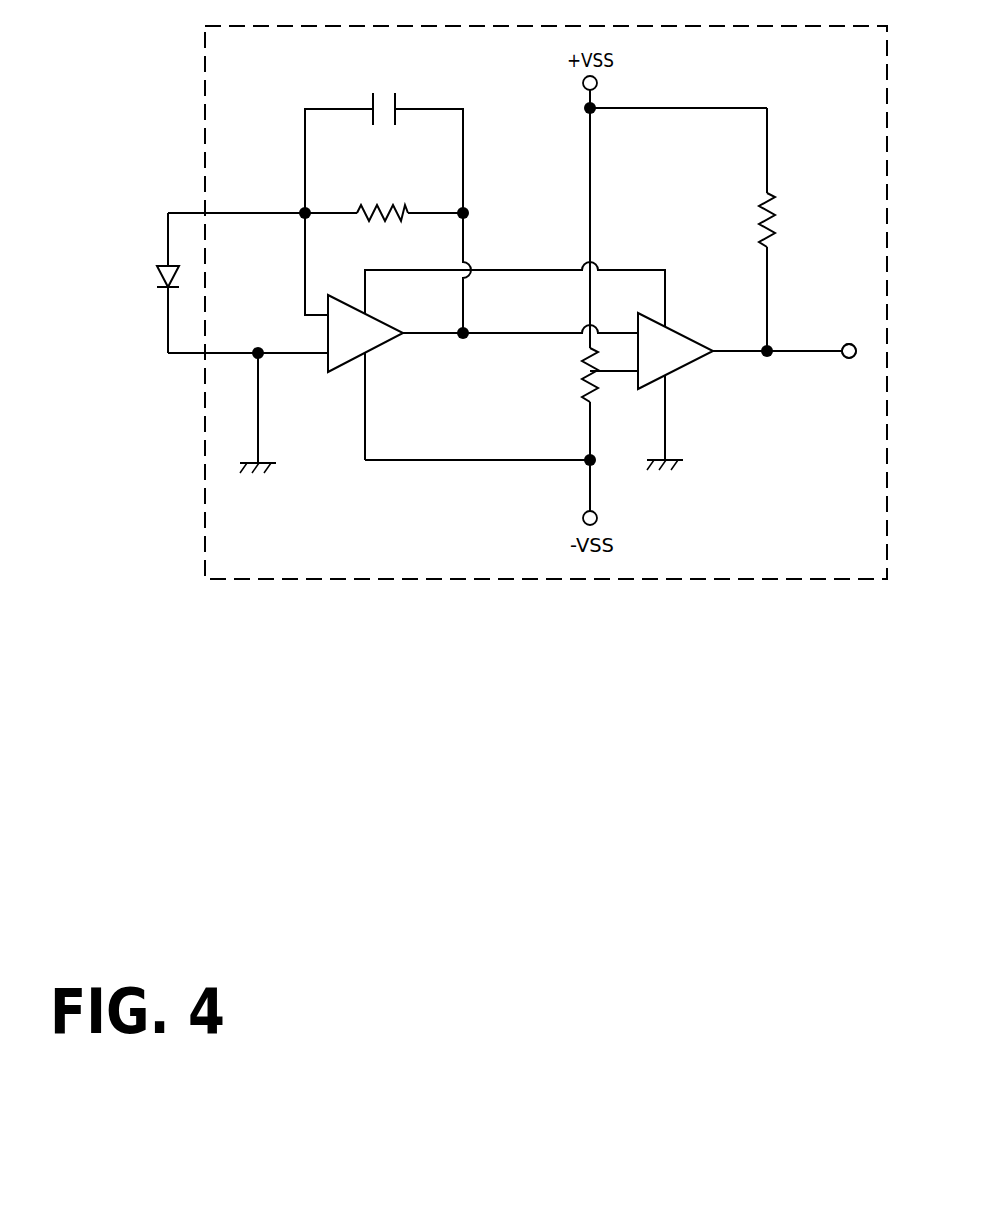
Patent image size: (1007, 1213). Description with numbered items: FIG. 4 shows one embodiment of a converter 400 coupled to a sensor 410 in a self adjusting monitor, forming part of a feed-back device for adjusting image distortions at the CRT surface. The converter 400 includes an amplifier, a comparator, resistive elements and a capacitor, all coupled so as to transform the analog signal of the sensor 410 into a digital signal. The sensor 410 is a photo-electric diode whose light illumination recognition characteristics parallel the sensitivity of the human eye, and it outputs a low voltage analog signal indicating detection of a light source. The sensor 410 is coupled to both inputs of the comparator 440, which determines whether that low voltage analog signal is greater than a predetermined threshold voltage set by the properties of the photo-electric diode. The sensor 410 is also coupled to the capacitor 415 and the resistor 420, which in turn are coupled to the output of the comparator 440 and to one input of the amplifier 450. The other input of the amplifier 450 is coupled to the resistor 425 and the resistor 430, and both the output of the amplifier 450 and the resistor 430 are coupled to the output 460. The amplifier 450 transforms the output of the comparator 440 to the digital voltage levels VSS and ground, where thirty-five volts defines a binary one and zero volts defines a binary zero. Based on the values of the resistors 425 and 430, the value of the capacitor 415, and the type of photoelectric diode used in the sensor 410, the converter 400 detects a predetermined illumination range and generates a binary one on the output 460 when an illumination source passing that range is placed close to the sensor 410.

The converter 400 is at (253, 606).
The sensor 410 is at (148, 259).
The capacitor 415 is at (384, 90).
The resistor 420 is at (382, 200).
The resistor 425 is at (578, 380).
The resistor 430 is at (780, 222).
The comparator 440 is at (375, 350).
The amplifier 450 is at (684, 372).
The output 460 is at (842, 344).